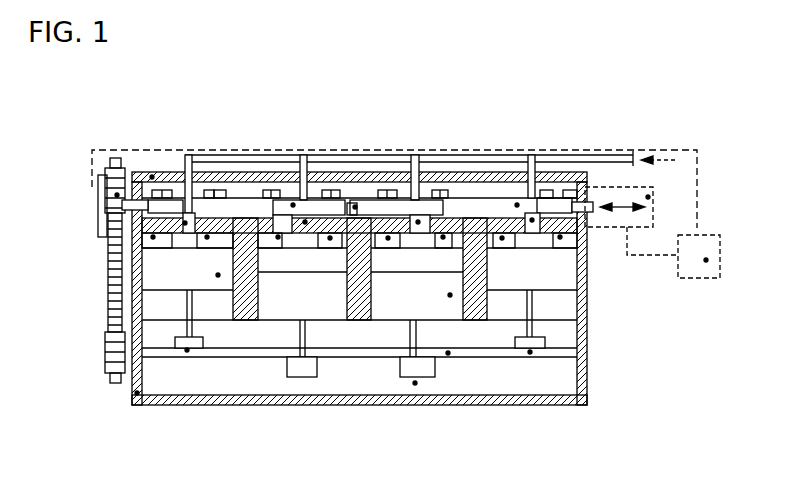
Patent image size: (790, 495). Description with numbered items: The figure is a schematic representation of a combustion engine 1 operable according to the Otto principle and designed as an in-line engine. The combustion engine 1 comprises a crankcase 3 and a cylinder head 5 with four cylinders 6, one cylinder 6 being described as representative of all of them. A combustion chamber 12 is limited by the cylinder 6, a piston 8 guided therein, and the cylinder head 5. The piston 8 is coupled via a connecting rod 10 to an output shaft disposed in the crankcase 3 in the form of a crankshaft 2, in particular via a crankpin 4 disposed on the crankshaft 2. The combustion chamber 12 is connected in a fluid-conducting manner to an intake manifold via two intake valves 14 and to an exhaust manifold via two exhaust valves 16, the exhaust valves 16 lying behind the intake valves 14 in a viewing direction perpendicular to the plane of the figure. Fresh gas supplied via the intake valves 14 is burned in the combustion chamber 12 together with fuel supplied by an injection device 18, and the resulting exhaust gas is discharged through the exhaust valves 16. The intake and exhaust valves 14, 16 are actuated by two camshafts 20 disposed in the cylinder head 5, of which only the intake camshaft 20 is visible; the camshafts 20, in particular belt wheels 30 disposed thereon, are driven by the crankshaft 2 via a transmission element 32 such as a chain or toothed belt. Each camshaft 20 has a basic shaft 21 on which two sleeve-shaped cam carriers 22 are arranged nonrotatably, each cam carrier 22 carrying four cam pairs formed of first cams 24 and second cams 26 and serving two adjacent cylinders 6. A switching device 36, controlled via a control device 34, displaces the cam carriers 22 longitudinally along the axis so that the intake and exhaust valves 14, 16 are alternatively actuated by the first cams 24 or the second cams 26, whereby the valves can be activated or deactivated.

The combustion engine 1 is at (74, 145).
The crankshaft 2 is at (448, 353).
The crankcase 3 is at (137, 393).
The crankpin 4 is at (174, 381).
The cylinder head 5 is at (152, 177).
The cylinder 6 is at (148, 311).
The piston 8 is at (218, 275).
The connecting rod 10 is at (187, 350).
The combustion chamber 12 is at (227, 229).
The intake valve 14 is at (351, 338).
The exhaust valve 16 is at (207, 237).
The injection device 18 is at (185, 223).
The camshaft 20 is at (372, 183).
The basic shaft 21 is at (355, 207).
The cam carrier 22 is at (293, 205).
The first cam 24 is at (224, 178).
The second cam 26 is at (210, 178).
The belt wheel 30 is at (117, 195).
The transmission element 32 is at (92, 293).
The control device 34 is at (706, 260).
The switching device 36 is at (648, 197).